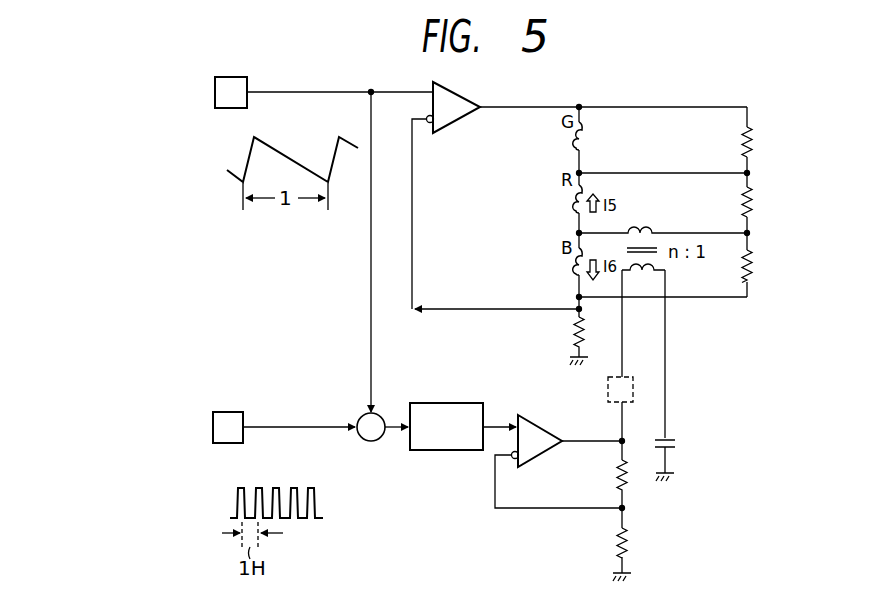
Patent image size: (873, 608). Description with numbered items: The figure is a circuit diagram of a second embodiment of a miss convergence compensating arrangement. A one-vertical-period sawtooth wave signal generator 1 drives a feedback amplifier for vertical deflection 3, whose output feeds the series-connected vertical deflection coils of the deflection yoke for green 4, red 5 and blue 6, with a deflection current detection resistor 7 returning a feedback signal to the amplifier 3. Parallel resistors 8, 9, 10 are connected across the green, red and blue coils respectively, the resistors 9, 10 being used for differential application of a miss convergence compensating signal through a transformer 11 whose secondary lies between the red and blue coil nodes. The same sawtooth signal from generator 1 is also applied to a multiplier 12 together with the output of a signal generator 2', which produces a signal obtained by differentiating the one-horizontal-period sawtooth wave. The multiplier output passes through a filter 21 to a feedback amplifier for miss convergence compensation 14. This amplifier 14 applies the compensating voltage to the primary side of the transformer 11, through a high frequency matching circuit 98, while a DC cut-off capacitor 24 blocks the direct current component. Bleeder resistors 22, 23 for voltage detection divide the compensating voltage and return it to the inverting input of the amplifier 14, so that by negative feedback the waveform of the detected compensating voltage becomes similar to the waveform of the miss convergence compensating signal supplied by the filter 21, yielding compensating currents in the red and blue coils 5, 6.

The 1V sawtooth wave signal generator 1 is at (232, 77).
The signal generator 2' is at (228, 410).
The feedback amplifier for vertical deflection 3 is at (458, 92).
The vertical deflection coil for green 4 is at (585, 137).
The vertical deflection coil for red 5 is at (573, 206).
The vertical deflection coil for blue 6 is at (574, 269).
The deflection current detection resistor 7 is at (573, 336).
The parallel resistor of DY for green 8 is at (757, 146).
The parallel resistor of DY for red 9 is at (757, 207).
The parallel resistor of DY for blue 10 is at (757, 263).
The transformer 11 is at (644, 228).
The multiplier 12 is at (359, 414).
The feedback amplifier for miss convergence compensation 14 is at (545, 455).
The filter 21 is at (447, 403).
The bleeder resistor for voltage detection 22 is at (616, 480).
The bleeder resistor for voltage detection 23 is at (630, 541).
The DC cut-off capacitor 24 is at (677, 444).
The high frequency matching circuit 98 is at (607, 392).